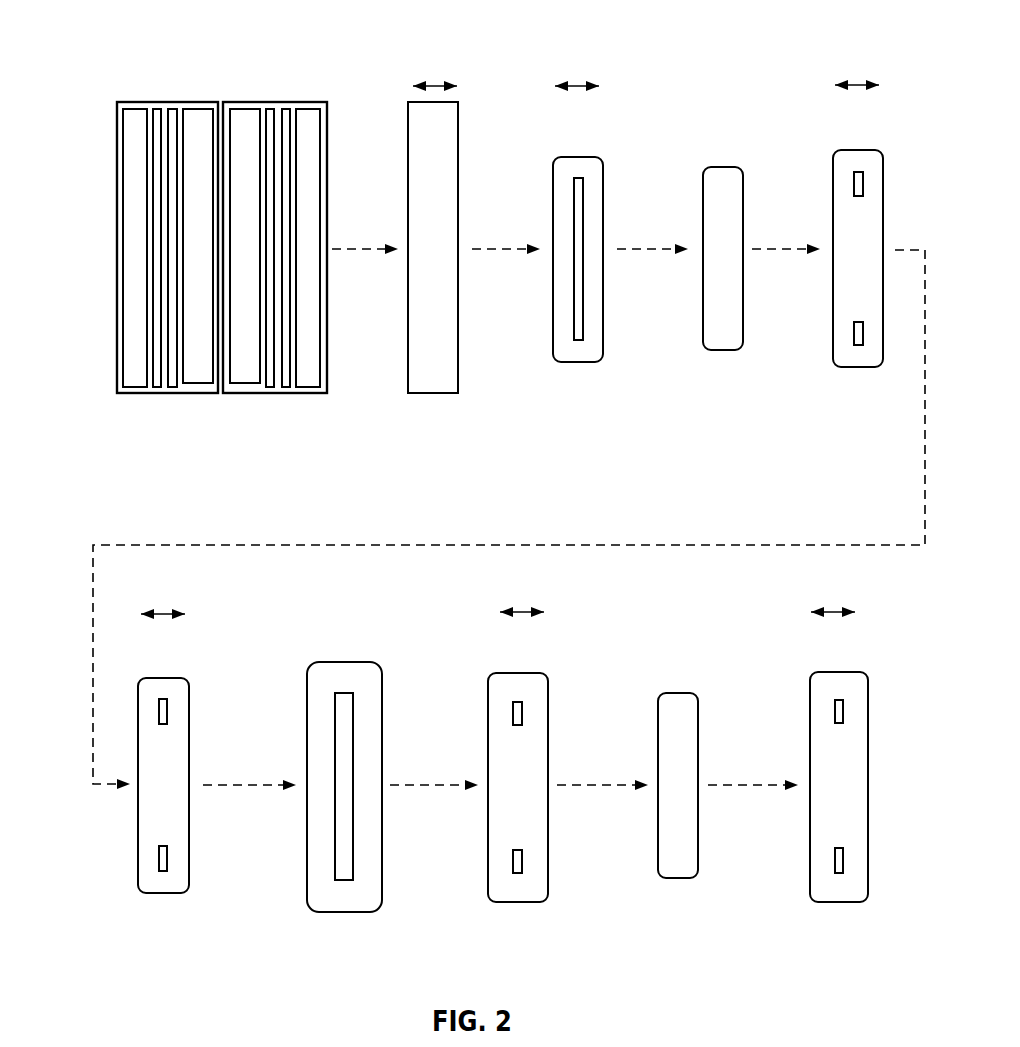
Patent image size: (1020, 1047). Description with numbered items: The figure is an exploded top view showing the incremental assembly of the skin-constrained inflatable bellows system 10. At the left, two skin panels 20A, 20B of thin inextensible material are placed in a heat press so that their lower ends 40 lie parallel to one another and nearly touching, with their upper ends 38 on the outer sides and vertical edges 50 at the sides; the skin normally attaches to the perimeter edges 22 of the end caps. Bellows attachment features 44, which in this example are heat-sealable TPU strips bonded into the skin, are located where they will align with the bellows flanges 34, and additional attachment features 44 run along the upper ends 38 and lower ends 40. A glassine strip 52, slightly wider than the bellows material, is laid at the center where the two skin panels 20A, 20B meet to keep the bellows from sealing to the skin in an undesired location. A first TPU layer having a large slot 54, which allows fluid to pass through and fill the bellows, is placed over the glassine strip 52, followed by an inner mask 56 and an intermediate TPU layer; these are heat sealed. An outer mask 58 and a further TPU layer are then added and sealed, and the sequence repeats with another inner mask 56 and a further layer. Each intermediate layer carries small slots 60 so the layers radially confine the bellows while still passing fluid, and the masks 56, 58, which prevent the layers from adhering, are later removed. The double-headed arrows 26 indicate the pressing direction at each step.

The skin-constrained inflatable bellows system 10 is at (68, 95).
The skin panel 20A is at (170, 102).
The skin panel 20B is at (290, 102).
The perimeter edge 22 is at (501, 506).
The direction of motion 26 is at (436, 86).
The bellows flange 34 is at (501, 506).
The upper end 38 is at (117, 185).
The lower end 40 is at (212, 262).
The bellows attachment feature 44 is at (182, 380).
The vertical edge 50 is at (247, 102).
The glassine strip 52 is at (433, 393).
The large slot 54 is at (583, 210).
The inner mask 56 is at (723, 350).
The outer mask 58 is at (343, 912).
The small slot 60 is at (863, 183).